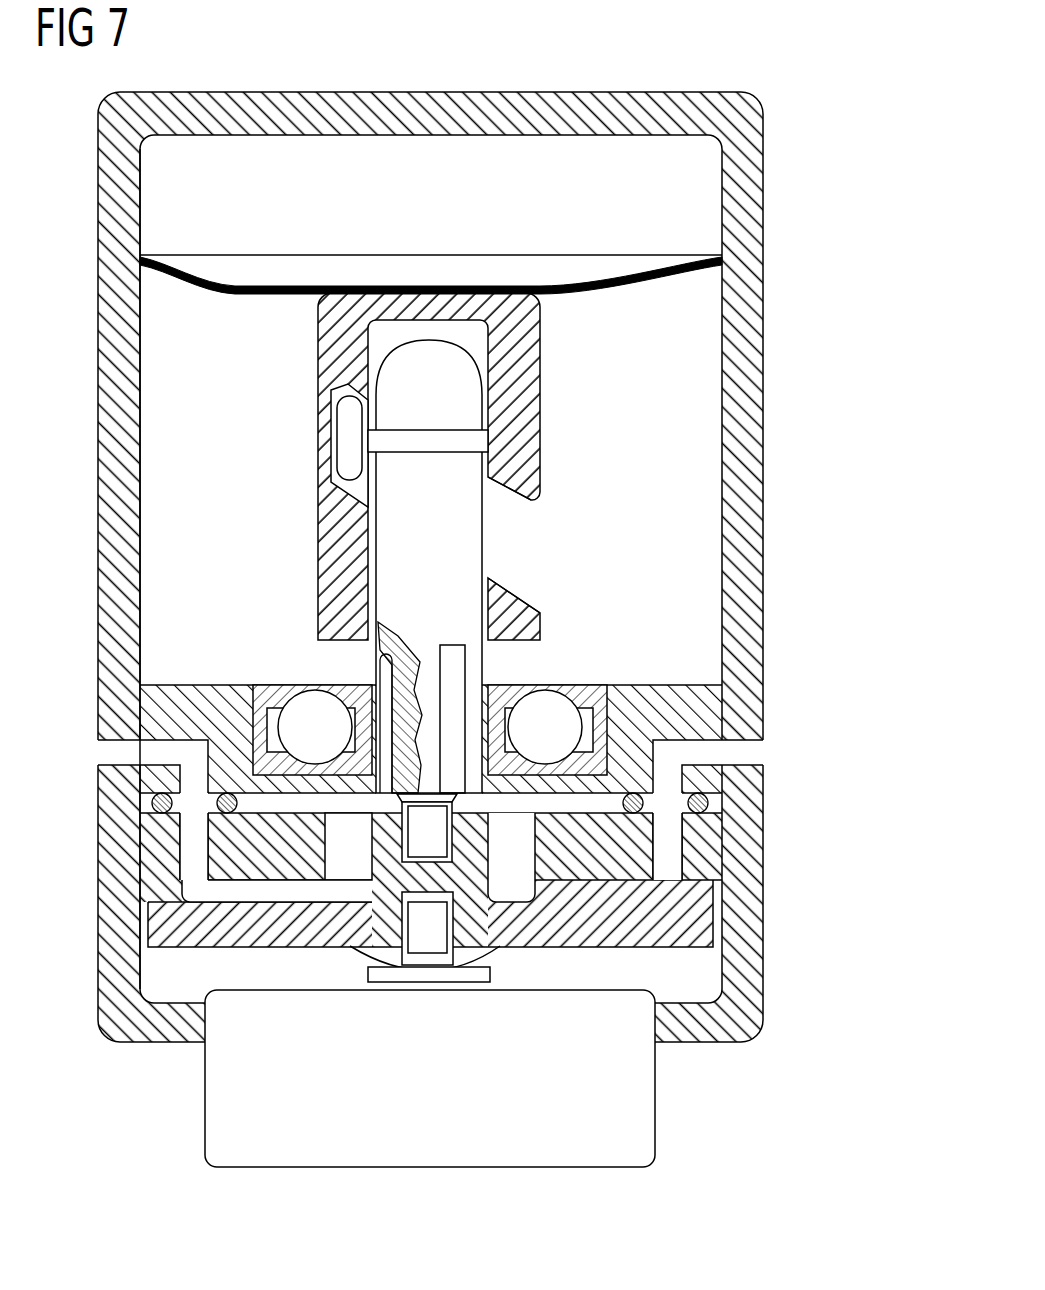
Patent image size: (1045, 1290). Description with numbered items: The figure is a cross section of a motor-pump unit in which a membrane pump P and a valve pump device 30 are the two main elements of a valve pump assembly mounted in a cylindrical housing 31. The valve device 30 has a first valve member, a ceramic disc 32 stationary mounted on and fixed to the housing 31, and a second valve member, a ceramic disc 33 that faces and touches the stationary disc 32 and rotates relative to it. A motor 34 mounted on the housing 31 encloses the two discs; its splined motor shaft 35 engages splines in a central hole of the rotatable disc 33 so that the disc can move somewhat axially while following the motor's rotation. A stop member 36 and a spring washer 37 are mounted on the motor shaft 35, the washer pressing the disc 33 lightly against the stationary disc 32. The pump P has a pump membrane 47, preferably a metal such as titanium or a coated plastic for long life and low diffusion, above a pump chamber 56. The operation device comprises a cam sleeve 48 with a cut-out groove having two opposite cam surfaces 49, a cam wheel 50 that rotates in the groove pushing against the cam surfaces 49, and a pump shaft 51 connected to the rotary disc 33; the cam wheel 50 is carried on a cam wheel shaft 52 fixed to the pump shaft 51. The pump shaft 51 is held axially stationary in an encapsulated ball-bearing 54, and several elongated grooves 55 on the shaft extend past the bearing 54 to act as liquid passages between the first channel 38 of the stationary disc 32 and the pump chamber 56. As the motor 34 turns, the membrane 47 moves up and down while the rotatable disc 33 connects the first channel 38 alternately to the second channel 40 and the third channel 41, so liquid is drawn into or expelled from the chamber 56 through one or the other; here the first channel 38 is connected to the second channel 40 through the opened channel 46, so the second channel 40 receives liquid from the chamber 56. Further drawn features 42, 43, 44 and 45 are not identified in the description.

The valve pump device 30 is at (702, 988).
The cylindrical housing 31 is at (107, 386).
The ceramic disc 32 is at (672, 845).
The ceramic disc 33 is at (693, 912).
The motor 34 is at (210, 1122).
The motor shaft 35 is at (428, 942).
The stop member 36 is at (385, 979).
The spring washer 37 is at (495, 947).
The first channel 38 is at (348, 870).
The second channel 40 is at (195, 848).
The third channel 41 is at (700, 868).
The seal ring 42 is at (152, 804).
The seal ring 43 is at (708, 800).
The channel 44 is at (113, 755).
The channel 45 is at (753, 752).
The opened channel 46 is at (190, 893).
The pump membrane 47 is at (237, 298).
The cam sleeve 48 is at (526, 390).
The cam surfaces 49 is at (508, 492).
The cam wheel 50 is at (360, 436).
The pump shaft 51 is at (472, 540).
The cam wheel shaft 52 is at (428, 440).
The encapsulated ball-bearing 54 is at (307, 708).
The elongated grooves 55 is at (382, 677).
The pump chamber 56 is at (247, 510).
The membrane pump P is at (622, 170).